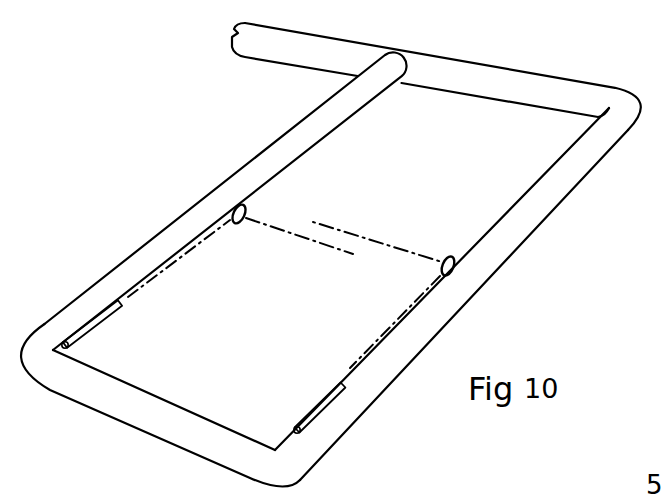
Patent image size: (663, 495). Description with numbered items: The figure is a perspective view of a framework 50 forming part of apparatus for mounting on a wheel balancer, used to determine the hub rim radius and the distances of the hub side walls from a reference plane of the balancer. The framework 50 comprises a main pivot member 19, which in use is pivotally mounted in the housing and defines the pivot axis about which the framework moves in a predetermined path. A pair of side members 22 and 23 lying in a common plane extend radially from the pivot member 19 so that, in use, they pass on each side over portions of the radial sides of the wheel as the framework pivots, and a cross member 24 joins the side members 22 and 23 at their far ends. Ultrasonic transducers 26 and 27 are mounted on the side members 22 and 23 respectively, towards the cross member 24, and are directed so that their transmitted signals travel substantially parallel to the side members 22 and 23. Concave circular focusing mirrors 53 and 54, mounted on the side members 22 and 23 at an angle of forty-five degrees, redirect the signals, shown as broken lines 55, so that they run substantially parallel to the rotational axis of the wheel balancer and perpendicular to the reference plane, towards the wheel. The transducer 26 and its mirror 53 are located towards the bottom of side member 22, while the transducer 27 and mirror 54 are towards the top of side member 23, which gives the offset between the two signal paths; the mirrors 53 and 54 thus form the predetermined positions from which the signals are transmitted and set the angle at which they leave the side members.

The framework 50 is at (435, 33).
The main pivot member 19 is at (524, 83).
The side member 22 is at (302, 130).
The side member 23 is at (508, 244).
The cross member 24 is at (143, 422).
The focusing mirror 53 is at (249, 210).
The focusing mirror 54 is at (446, 255).
The ultrasonic transducer 26 is at (100, 317).
The ultrasonic transducer 27 is at (312, 407).
The broken lines 55 is at (378, 243).